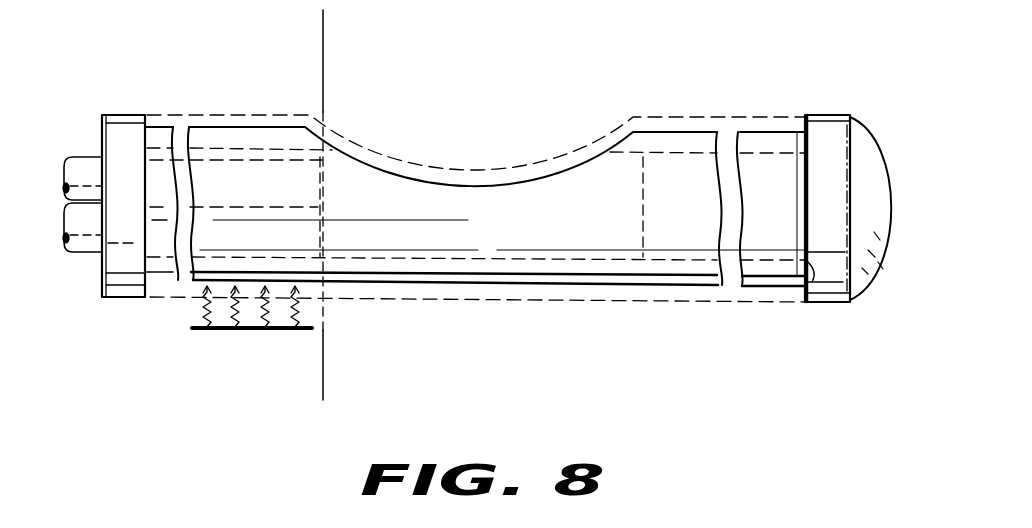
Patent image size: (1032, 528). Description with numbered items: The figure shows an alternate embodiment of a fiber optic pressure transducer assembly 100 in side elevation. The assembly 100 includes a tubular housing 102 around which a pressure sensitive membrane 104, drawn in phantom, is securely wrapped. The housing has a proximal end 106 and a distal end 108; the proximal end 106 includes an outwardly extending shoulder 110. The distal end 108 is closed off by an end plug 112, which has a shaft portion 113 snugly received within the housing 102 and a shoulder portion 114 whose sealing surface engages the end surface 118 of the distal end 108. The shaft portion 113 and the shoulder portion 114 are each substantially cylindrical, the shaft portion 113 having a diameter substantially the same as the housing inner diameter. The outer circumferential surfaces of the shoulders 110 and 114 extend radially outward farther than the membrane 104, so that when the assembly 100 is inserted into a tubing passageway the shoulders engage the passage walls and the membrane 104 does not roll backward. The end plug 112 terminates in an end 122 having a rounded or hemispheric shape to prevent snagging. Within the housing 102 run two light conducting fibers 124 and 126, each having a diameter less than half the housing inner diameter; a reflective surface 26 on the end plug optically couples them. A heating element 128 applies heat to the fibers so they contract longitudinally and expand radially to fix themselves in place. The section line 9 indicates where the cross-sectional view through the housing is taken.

The section line 9- 9 is at (258, 33).
The reflective surface 26 is at (643, 203).
The pressure transducer assembly 100 is at (247, 107).
The housing 102 is at (643, 130).
The pressure sensitive membrane 104 is at (684, 113).
The proximal end 106 is at (103, 127).
The distal end 108 is at (797, 130).
The shoulder 110 is at (121, 115).
The end plug 112 is at (845, 104).
The shaft portion 113 is at (697, 232).
The shoulder portion 114 is at (828, 304).
The end surface 118 is at (807, 304).
The end 122 is at (874, 290).
The fiber 124 is at (318, 176).
The fiber 126 is at (322, 240).
The heating element 128 is at (218, 331).